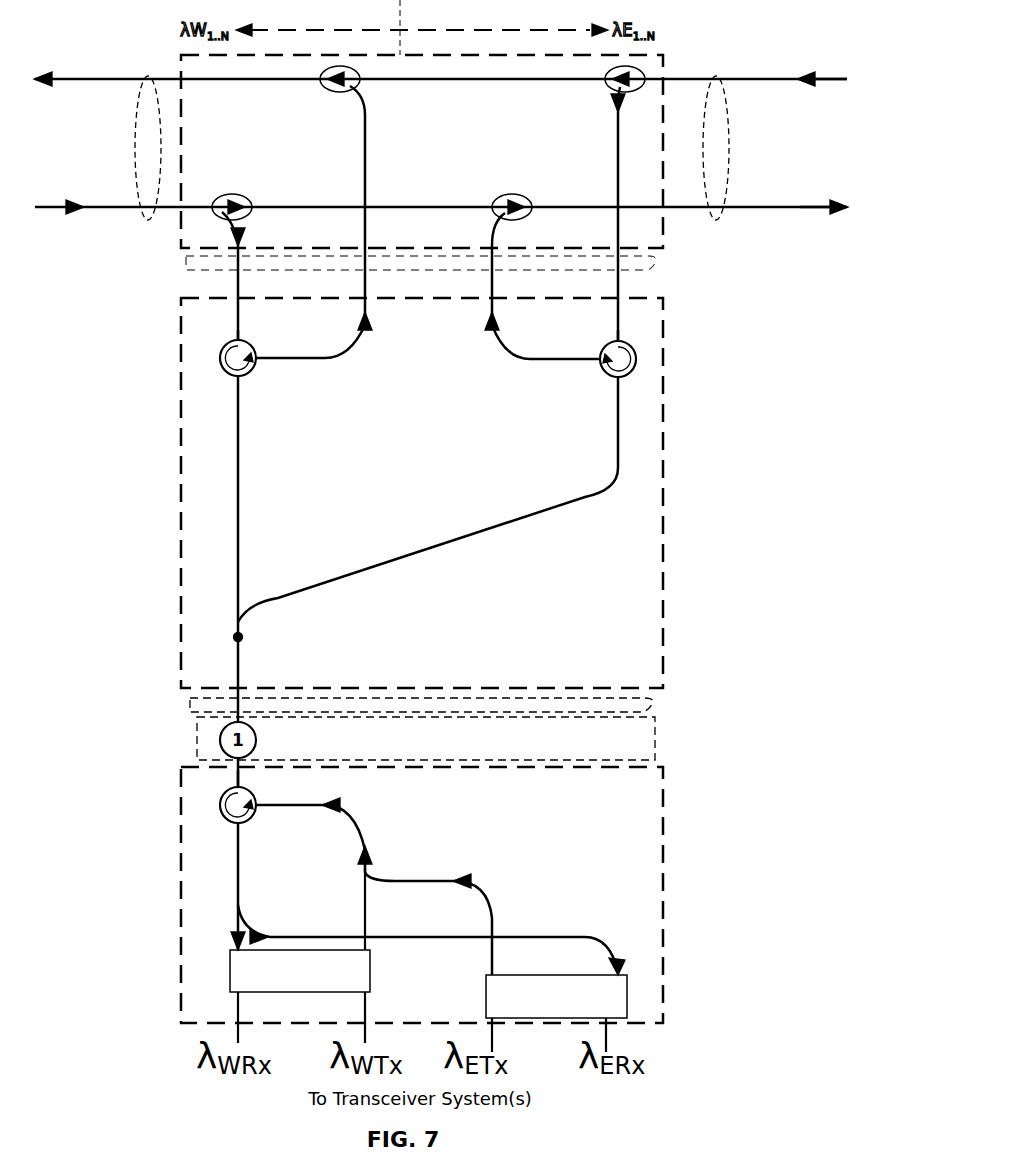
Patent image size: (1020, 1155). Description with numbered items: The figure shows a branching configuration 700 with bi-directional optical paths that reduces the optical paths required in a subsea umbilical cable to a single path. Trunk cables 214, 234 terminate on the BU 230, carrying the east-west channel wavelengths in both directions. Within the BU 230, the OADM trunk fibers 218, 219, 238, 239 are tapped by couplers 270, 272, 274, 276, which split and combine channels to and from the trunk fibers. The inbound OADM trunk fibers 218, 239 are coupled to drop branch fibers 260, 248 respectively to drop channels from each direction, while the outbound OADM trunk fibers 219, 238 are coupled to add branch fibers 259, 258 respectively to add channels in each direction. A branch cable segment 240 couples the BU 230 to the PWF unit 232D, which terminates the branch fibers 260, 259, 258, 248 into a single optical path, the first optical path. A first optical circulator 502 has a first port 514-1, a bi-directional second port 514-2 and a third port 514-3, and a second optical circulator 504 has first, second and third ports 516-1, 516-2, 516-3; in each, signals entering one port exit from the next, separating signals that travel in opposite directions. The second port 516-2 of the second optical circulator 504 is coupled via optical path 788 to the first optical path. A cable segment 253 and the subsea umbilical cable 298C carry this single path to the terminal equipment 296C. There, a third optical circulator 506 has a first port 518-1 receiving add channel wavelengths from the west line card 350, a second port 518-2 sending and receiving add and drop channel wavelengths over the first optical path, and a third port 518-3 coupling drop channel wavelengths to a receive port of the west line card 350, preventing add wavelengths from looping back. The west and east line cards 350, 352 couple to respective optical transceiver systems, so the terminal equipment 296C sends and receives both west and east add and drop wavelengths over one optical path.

The branching configuration 700 is at (110, 52).
The trunk cable 214 is at (148, 74).
The trunk cable 234 is at (716, 74).
The outbound OADM trunk fiber 219 is at (112, 84).
The inbound OADM trunk fiber 218 is at (128, 207).
The inbound OADM trunk fiber 239 is at (752, 84).
The outbound OADM trunk fiber 238 is at (745, 208).
The BU 230 is at (312, 55).
The coupler 270 is at (240, 196).
The coupler 272 is at (352, 86).
The coupler 274 is at (508, 196).
The coupler 276 is at (630, 88).
The branch cable segment 240 is at (222, 262).
The drop branch fiber 260 is at (236, 283).
The add branch fiber 259 is at (363, 283).
The add branch fiber 258 is at (494, 292).
The drop branch fiber 248 is at (620, 294).
The PWF unit 232D is at (180, 526).
The west circulator 502 is at (218, 354).
The first port 514-1 is at (236, 341).
The second port 514-2 is at (236, 380).
The third port 514-3 is at (260, 354).
The second optical circulator 504 is at (636, 368).
The first port 516-1 is at (612, 342).
The second port 516-2 is at (624, 380).
The third port 516-3 is at (598, 370).
The optical path 788 is at (438, 543).
The cable segment 253 is at (205, 700).
The subsea umbilical cable 298C is at (196, 724).
The terminal equipment 296C is at (180, 796).
The third optical circulator 506 is at (222, 798).
The first port 518-1 is at (258, 802).
The second port 518-2 is at (250, 782).
The third port 518-3 is at (236, 824).
The west line card 350 is at (300, 946).
The east line card 352 is at (556, 1013).